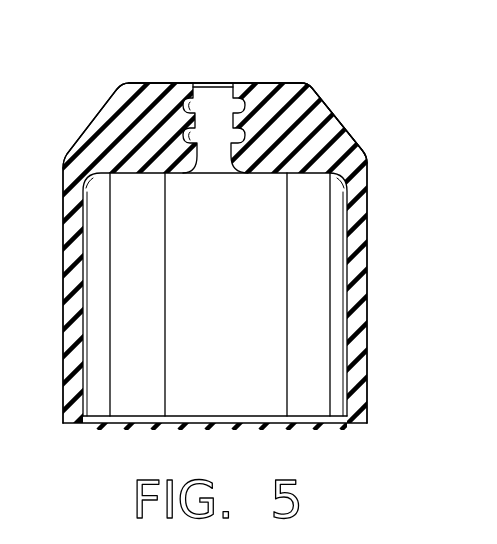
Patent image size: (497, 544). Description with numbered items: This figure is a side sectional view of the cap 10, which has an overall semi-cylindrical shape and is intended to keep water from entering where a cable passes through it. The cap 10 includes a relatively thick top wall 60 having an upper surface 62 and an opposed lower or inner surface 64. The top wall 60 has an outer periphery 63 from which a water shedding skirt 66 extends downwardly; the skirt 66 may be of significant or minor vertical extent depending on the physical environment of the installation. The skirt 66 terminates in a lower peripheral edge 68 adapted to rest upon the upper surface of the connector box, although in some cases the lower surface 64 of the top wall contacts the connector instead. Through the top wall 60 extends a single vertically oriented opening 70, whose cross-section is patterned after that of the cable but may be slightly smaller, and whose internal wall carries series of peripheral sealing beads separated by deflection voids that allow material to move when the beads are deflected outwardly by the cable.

The cap 10 is at (362, 107).
The top wall 60 is at (303, 102).
The upper surface 62 is at (158, 83).
The outer periphery 63 is at (363, 153).
The lower or inner surface 64 is at (347, 186).
The water shedding skirt 66 is at (368, 273).
The lower peripheral edge 68 is at (357, 423).
The opening 70 is at (213, 83).